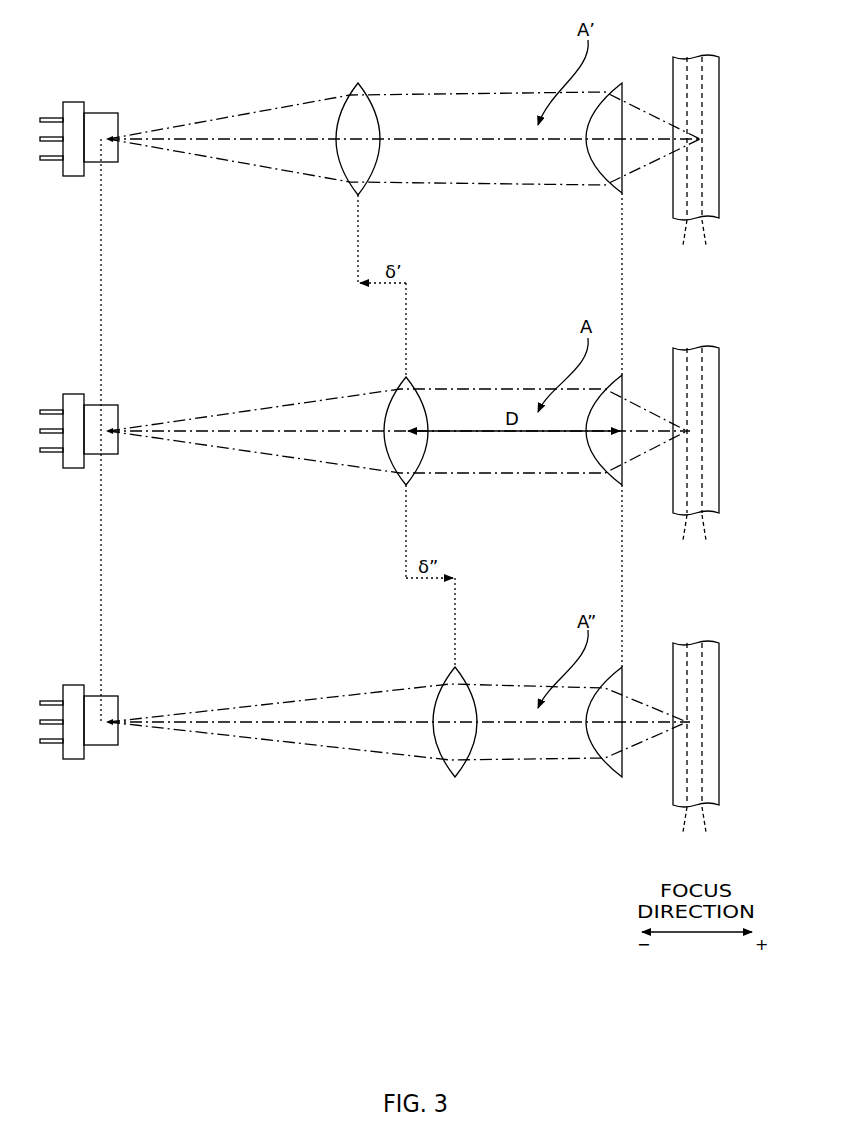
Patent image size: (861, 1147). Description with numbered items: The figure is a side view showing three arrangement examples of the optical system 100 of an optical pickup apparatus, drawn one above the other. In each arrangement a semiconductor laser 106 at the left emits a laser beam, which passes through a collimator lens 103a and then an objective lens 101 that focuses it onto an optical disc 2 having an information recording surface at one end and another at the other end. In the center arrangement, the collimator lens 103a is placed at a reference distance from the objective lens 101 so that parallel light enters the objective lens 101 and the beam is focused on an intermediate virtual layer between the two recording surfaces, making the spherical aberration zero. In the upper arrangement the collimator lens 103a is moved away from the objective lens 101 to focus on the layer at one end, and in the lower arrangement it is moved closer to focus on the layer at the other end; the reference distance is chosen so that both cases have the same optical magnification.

The optical disc 2 is at (720, 102).
The optical system 100 is at (459, 73).
The objective lens 101 is at (592, 157).
The collimator lens 103a is at (338, 155).
The semiconductor laser 106 is at (72, 177).